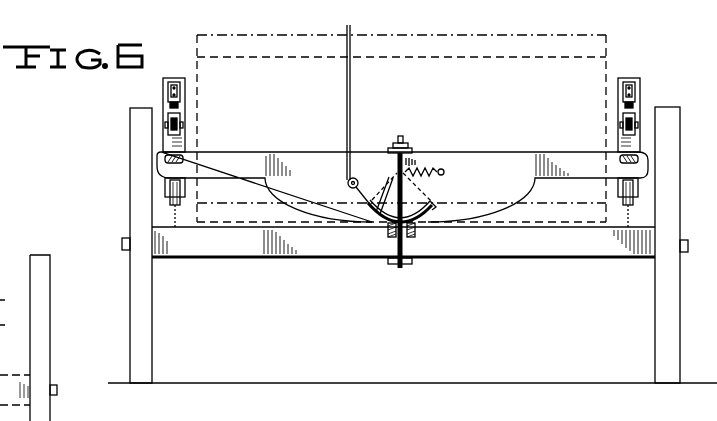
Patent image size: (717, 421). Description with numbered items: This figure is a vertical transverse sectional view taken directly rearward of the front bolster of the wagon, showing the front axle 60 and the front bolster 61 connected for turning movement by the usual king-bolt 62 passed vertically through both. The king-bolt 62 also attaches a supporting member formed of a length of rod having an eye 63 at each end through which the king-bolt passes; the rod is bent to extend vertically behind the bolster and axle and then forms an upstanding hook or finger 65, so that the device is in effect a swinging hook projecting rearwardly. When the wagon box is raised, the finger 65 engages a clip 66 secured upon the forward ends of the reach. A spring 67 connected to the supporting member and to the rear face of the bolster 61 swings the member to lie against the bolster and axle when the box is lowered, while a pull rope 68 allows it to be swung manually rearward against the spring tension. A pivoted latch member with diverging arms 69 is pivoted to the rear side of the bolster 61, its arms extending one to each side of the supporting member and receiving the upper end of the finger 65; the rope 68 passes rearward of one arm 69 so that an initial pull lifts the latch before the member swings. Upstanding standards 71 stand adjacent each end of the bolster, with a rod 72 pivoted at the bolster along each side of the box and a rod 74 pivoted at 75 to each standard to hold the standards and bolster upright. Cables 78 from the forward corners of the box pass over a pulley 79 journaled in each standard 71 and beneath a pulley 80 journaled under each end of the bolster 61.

The front axle 60 is at (545, 246).
The front bolster 61 is at (517, 152).
The king-bolt 62 is at (401, 143).
The eye 63 is at (415, 157).
The upstanding hook or finger 65 is at (420, 216).
The clip 66 is at (392, 230).
The spring 67 is at (444, 172).
The pull rope 68 is at (346, 101).
The diverging arms 69 is at (386, 226).
The upstanding standards 71 is at (182, 78).
The rod 72 is at (183, 158).
The rod 74 is at (168, 105).
The pivot 75 is at (181, 88).
The cables 78 is at (687, 110).
The pulley 79 is at (168, 128).
The pulley 80 is at (170, 194).